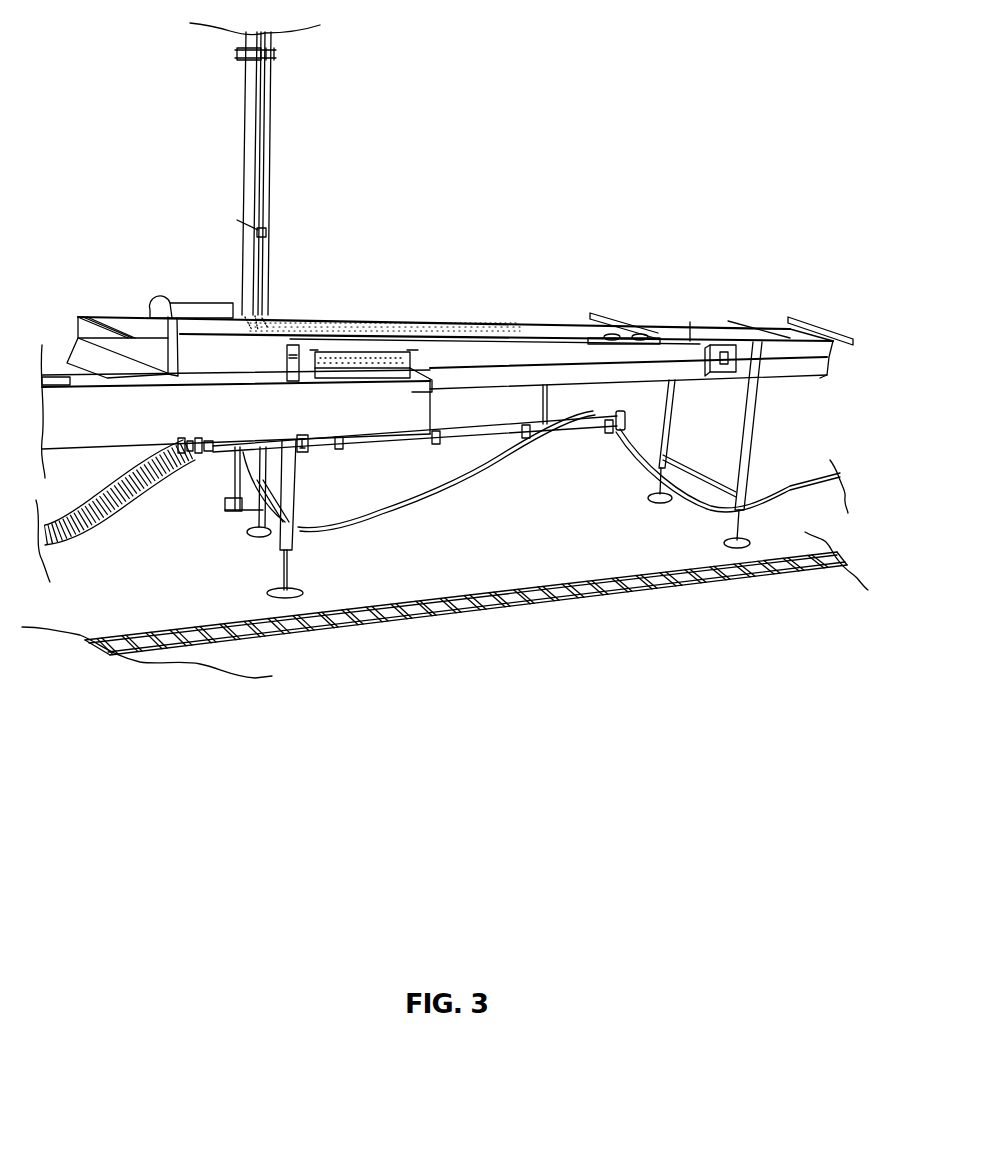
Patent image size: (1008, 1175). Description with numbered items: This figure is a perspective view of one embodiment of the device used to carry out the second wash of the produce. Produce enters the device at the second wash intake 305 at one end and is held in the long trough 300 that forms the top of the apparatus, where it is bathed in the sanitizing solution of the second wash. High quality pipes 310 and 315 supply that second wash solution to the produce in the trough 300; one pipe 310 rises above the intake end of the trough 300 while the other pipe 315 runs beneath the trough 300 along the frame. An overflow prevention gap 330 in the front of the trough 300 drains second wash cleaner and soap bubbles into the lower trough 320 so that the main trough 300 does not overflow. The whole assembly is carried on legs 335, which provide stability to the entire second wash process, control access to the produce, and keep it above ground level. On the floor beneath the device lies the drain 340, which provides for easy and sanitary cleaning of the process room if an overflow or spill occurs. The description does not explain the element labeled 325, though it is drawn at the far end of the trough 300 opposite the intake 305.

The trough 300 is at (110, 290).
The second wash intake 305 is at (78, 322).
The pipe 310 is at (203, 292).
The pipe 315 is at (580, 438).
The trough 320 is at (265, 420).
The adjustable panel 325 is at (712, 313).
The overflow prevention gap 330 is at (385, 352).
The legs 335 is at (305, 496).
The drain 340 is at (440, 585).